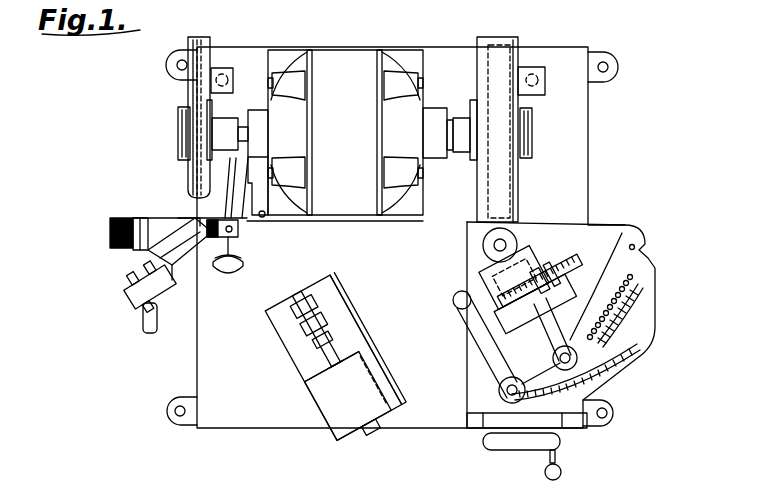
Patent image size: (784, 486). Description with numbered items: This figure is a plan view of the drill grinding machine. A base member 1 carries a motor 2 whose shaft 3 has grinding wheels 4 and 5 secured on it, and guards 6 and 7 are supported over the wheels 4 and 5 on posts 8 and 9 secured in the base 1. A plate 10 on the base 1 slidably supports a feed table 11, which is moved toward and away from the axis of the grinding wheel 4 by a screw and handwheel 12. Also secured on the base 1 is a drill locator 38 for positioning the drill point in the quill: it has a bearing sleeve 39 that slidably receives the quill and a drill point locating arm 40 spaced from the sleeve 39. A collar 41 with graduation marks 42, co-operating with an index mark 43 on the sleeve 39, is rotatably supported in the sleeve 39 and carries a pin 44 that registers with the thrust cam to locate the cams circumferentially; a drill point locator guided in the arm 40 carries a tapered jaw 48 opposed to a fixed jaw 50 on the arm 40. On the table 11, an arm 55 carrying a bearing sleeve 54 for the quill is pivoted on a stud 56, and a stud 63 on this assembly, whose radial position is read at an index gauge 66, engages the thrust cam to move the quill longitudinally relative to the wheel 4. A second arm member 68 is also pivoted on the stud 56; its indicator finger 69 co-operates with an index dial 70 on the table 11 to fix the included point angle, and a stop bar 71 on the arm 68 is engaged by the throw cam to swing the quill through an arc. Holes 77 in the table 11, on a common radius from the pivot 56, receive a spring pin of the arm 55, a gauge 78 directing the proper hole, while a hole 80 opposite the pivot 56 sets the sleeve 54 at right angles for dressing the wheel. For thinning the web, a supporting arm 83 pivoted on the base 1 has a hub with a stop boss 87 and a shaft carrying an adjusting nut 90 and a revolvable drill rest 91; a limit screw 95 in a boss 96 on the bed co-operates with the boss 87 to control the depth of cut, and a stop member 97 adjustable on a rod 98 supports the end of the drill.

The base member 1 is at (578, 108).
The motor 2 is at (335, 117).
The shaft 3 is at (178, 125).
The grinding wheel 4 is at (514, 50).
The grinding wheel 5 is at (199, 42).
The guard 6 is at (500, 52).
The guard 7 is at (188, 45).
The post 8 is at (535, 74).
The post 9 is at (223, 73).
The plate 10 is at (473, 420).
The feed table 11 is at (592, 238).
The screw and handwheel 12 is at (517, 443).
The drill locator 38 is at (298, 353).
The bearing sleeve 39 is at (330, 390).
The drill point locating arm 40 is at (332, 274).
The collar 41 is at (383, 343).
The graduation marks 42 is at (337, 433).
The index mark 43 is at (398, 380).
The pin or stud 44 is at (378, 432).
The jaw 48 is at (273, 328).
The fixed jaw 50 is at (327, 330).
The bearing sleeve 54 is at (533, 252).
The arm 55 is at (550, 328).
The pivot stud 56 is at (494, 245).
The pin or stud 63 is at (576, 293).
The index gauge 66 is at (586, 278).
The second arm member 68 is at (557, 367).
The indicator finger portion 69 is at (578, 378).
The index dial 70 is at (594, 373).
The stop bar 71 is at (473, 350).
The holes 77 is at (631, 282).
The gauge 78 is at (640, 308).
The hole 80 is at (635, 246).
The supporting arm 83 is at (230, 182).
The stop boss 87 is at (240, 226).
The adjusting nut 90 is at (110, 228).
The drill rest 91 is at (162, 218).
The limit screw 95 is at (226, 278).
The boss 96 is at (240, 238).
The stop member 97 is at (143, 320).
The rod 98 is at (136, 278).